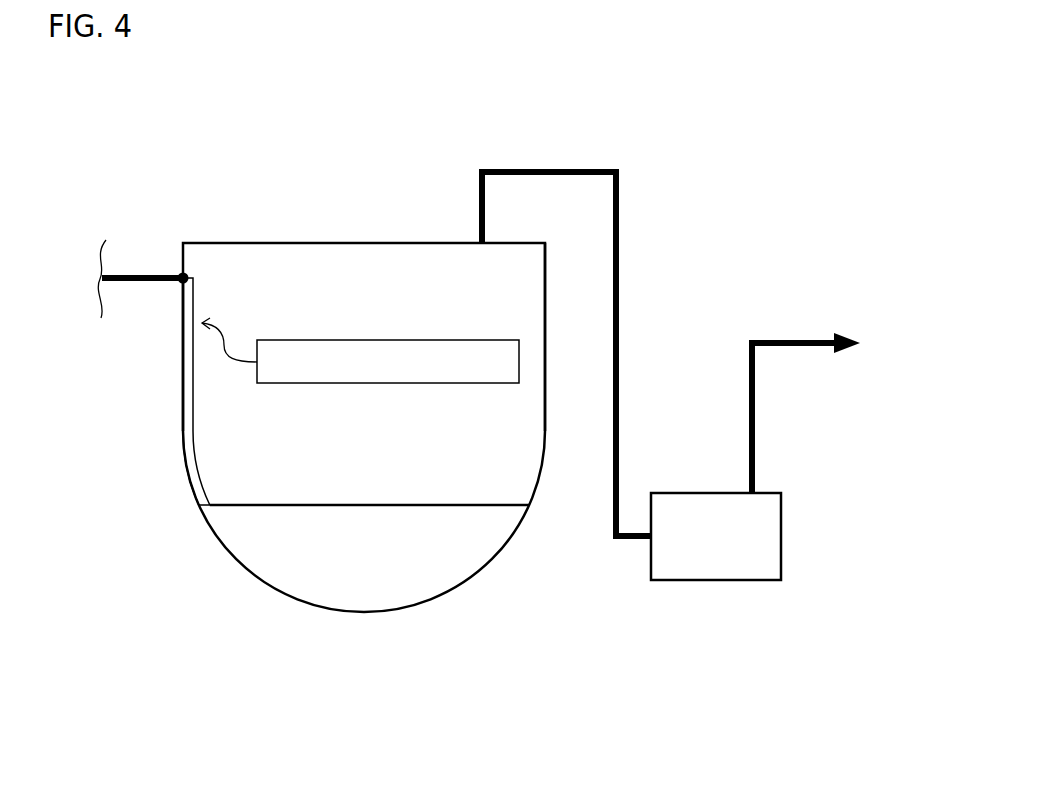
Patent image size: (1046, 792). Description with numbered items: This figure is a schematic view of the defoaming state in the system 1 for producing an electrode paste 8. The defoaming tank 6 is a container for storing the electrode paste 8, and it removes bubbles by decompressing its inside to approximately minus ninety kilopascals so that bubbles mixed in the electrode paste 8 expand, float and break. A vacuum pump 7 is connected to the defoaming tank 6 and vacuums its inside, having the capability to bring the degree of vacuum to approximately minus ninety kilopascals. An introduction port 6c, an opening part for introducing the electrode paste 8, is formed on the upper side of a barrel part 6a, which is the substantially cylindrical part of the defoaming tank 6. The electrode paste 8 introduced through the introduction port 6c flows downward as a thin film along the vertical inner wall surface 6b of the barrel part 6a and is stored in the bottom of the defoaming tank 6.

The system 1 is at (699, 113).
The defoaming tank 6 is at (380, 636).
The barrel part 6a is at (561, 343).
The inner wall surface 6b is at (185, 371).
The introduction port 6c is at (183, 278).
The vacuum pump 7 is at (714, 603).
The electrode paste 8 is at (195, 465).